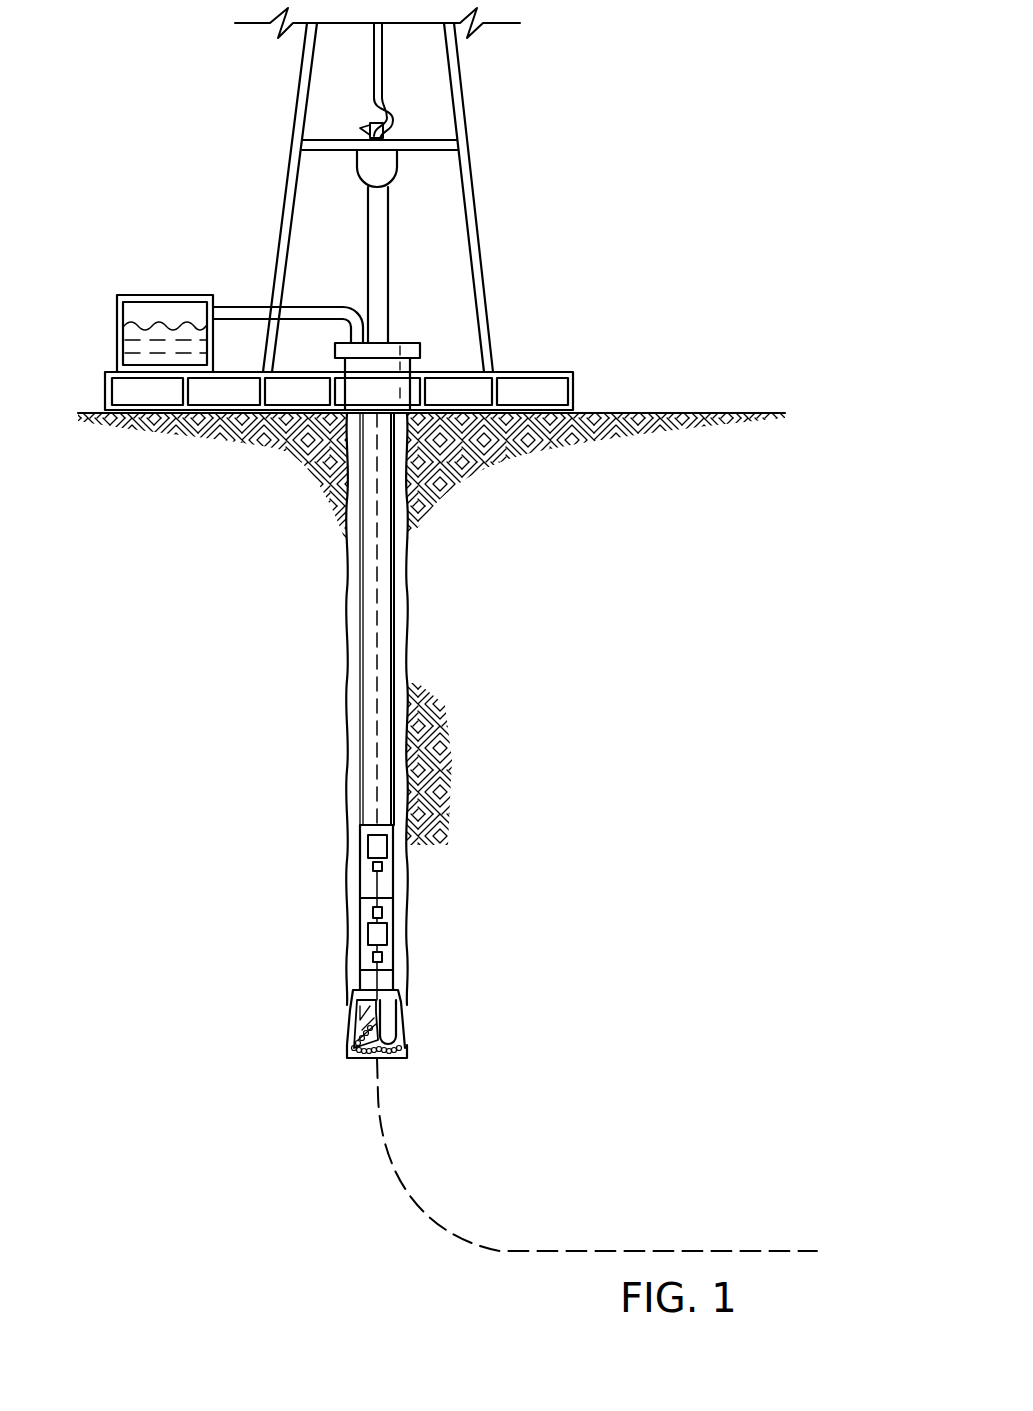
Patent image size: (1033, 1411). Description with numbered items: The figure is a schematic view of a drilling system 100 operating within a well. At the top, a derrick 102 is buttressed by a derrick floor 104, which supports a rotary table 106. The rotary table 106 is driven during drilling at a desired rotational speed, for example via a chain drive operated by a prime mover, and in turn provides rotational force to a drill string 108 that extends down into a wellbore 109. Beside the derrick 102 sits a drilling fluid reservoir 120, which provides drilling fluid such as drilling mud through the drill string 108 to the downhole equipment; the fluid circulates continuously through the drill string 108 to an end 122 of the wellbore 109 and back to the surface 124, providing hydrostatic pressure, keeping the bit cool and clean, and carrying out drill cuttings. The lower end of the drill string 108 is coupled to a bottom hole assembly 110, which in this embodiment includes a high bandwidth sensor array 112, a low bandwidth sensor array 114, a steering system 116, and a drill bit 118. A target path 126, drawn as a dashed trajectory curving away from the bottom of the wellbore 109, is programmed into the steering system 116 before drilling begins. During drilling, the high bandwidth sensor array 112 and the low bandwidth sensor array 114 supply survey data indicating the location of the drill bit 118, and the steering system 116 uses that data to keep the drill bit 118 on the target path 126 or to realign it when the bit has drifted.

The drilling system 100 is at (222, 176).
The derrick 102 is at (475, 232).
The derrick floor 104 is at (527, 372).
The rotary table 106 is at (408, 343).
The drill string 108 is at (368, 590).
The wellbore 109 is at (407, 636).
The bottom hole assembly 110 is at (326, 926).
The high bandwidth sensor array 112 is at (357, 863).
The low bandwidth sensor array 114 is at (397, 931).
The steering system 116 is at (368, 978).
The drill bit 118 is at (393, 1022).
The drilling fluid reservoir 120 is at (163, 295).
The end of the wellbore 122 is at (357, 1062).
The surface 124 is at (663, 413).
The target path 126 is at (392, 1152).